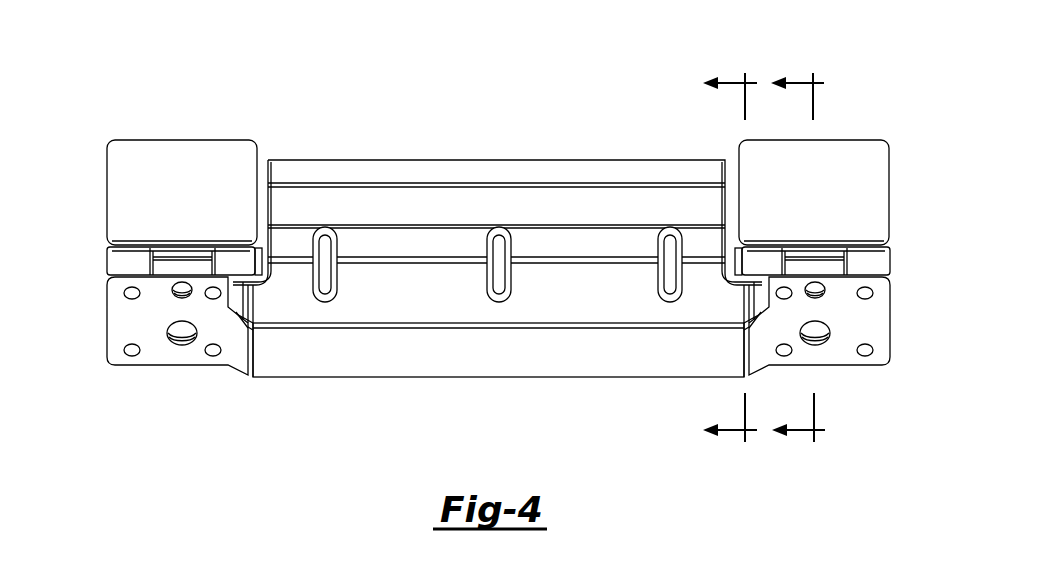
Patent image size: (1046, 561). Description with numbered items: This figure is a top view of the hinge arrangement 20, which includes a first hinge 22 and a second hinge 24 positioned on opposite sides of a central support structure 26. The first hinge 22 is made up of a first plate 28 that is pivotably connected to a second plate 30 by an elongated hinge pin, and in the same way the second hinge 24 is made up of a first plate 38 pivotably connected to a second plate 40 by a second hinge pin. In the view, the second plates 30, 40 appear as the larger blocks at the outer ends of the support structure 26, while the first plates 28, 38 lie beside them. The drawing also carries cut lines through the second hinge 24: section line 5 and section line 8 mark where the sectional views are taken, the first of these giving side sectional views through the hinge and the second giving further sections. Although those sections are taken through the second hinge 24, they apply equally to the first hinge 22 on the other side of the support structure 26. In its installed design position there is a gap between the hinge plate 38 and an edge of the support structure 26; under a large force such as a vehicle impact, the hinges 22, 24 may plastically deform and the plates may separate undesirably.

The hinge arrangement 20 is at (573, 93).
The first hinge 22 is at (88, 265).
The second hinge 24 is at (907, 267).
The support structure 26 is at (482, 405).
The first plate 28 is at (163, 365).
The second plate 30 is at (120, 203).
The first plate 38 is at (890, 335).
The second plate 40 is at (875, 203).
The section line 5- 5 is at (730, 260).
The section line 8- 8 is at (798, 260).